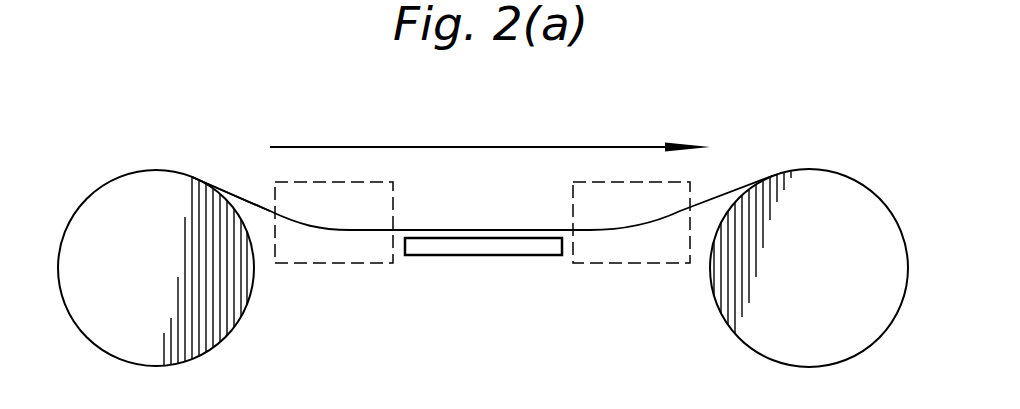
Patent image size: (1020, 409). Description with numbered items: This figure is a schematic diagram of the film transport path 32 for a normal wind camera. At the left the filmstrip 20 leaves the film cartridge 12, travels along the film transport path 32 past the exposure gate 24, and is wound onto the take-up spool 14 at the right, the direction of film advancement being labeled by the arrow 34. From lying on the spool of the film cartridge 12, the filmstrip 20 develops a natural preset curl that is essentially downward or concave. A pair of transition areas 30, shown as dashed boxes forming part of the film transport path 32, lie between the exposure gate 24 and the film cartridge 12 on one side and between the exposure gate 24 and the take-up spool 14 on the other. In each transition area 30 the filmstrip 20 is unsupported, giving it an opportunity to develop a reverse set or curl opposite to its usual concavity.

The film cartridge 12 is at (211, 326).
The take-up spool 14 is at (741, 323).
The filmstrip 20 is at (234, 192).
The exposure gate 24 is at (498, 256).
The transition areas 30 is at (340, 255).
The film transport path 32 is at (258, 212).
The arrow 34 is at (600, 146).